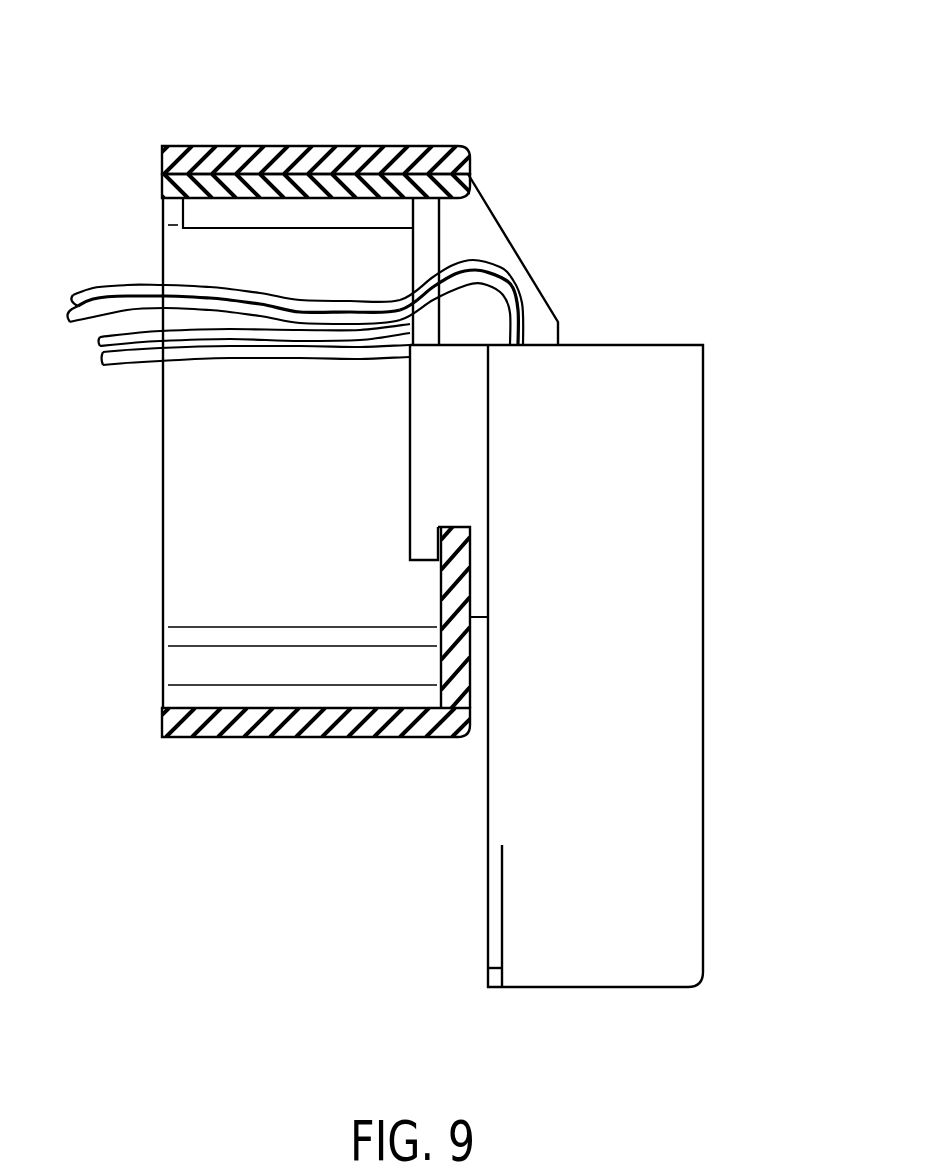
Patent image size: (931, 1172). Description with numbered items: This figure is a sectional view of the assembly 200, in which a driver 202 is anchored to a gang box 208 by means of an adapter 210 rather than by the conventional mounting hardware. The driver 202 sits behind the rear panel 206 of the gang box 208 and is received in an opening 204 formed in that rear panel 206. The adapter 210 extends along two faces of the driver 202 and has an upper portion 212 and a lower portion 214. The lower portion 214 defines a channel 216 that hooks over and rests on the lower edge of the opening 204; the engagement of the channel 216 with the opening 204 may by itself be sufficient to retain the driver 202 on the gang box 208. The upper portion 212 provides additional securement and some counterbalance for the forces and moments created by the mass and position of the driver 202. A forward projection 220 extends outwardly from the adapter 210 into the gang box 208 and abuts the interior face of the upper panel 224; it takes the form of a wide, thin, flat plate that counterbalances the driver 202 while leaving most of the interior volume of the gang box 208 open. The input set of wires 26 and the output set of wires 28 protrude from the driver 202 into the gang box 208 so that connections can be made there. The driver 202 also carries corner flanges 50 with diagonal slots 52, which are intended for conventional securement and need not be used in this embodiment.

The assembly 200 is at (392, 97).
The driver 202 is at (704, 688).
The opening 204 is at (462, 224).
The rear panel 206 is at (475, 712).
The gang box 208 is at (293, 149).
The adapter 210 is at (539, 291).
The upper portion 212 is at (412, 254).
The lower portion 214 is at (408, 505).
The channel 216 is at (440, 563).
The forward projection 220 is at (231, 213).
The upper panel 224 is at (360, 185).
The input set of wires 26 is at (130, 361).
The output set of wires 28 is at (100, 293).
The corner flanges 50 is at (496, 908).
The diagonal slots 52 is at (495, 981).